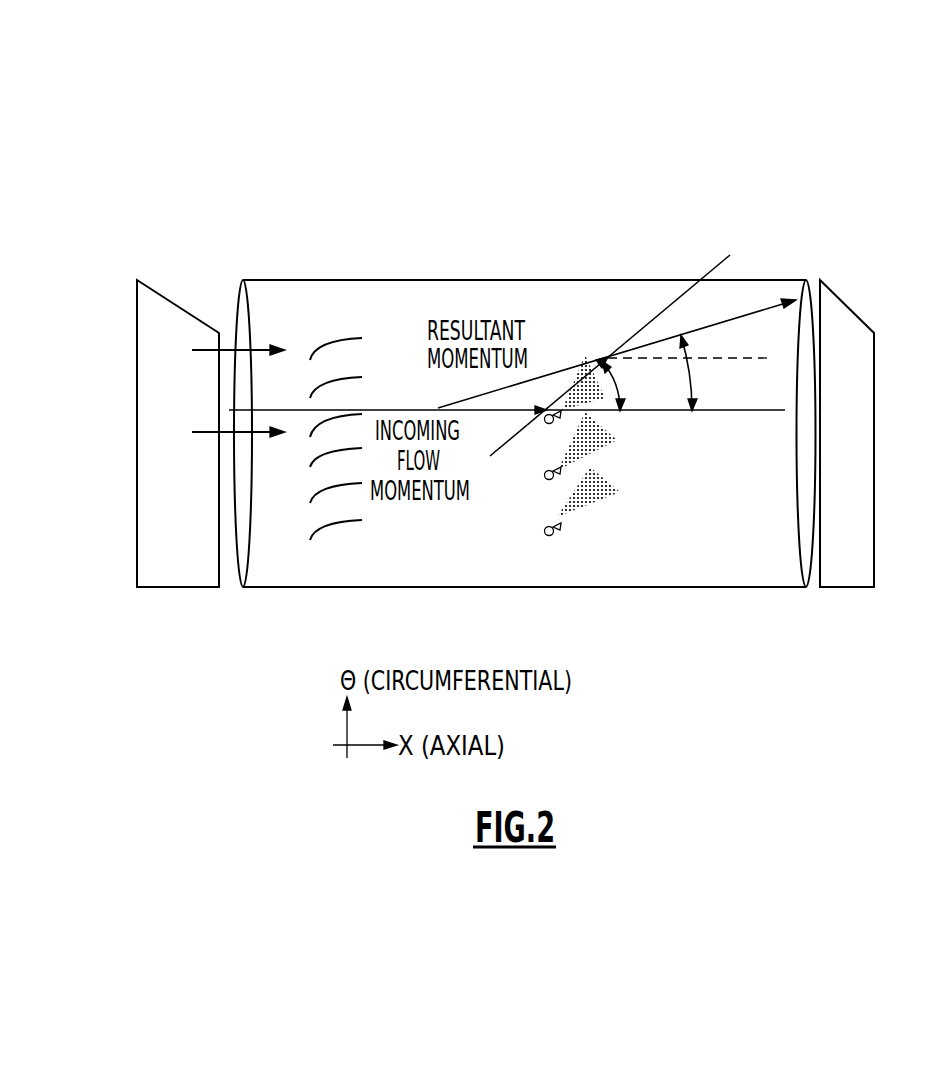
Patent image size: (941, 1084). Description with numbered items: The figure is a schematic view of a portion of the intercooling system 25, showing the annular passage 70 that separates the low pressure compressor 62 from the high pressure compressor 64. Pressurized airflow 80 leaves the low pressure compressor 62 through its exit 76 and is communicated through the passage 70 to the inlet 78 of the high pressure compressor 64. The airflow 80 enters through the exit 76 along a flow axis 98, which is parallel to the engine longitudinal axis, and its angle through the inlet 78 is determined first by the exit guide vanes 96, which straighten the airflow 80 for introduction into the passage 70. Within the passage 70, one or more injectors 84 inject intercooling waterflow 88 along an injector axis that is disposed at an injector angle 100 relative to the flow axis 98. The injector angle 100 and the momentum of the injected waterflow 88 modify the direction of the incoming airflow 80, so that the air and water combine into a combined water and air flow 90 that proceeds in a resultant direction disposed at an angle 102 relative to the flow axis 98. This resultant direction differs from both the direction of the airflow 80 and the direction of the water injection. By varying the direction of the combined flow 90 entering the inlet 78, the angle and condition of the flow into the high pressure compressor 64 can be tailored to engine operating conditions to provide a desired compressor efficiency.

The intercooling system 25 is at (595, 183).
The low pressure compressor 62 is at (170, 575).
The high pressure compressor 64 is at (843, 563).
The annular passage 70 is at (525, 466).
The exit 76 is at (245, 560).
The inlet 78 is at (808, 575).
The pressurized airflow 80 is at (185, 440).
The injectors 84 is at (548, 424).
The intercooling waterflow 88 is at (603, 520).
The combined water and air flow 90 is at (750, 308).
The exit guide vanes 96 is at (293, 553).
The flow axis 98 is at (762, 411).
The injector angle 100 is at (620, 380).
The angle 102 is at (698, 380).